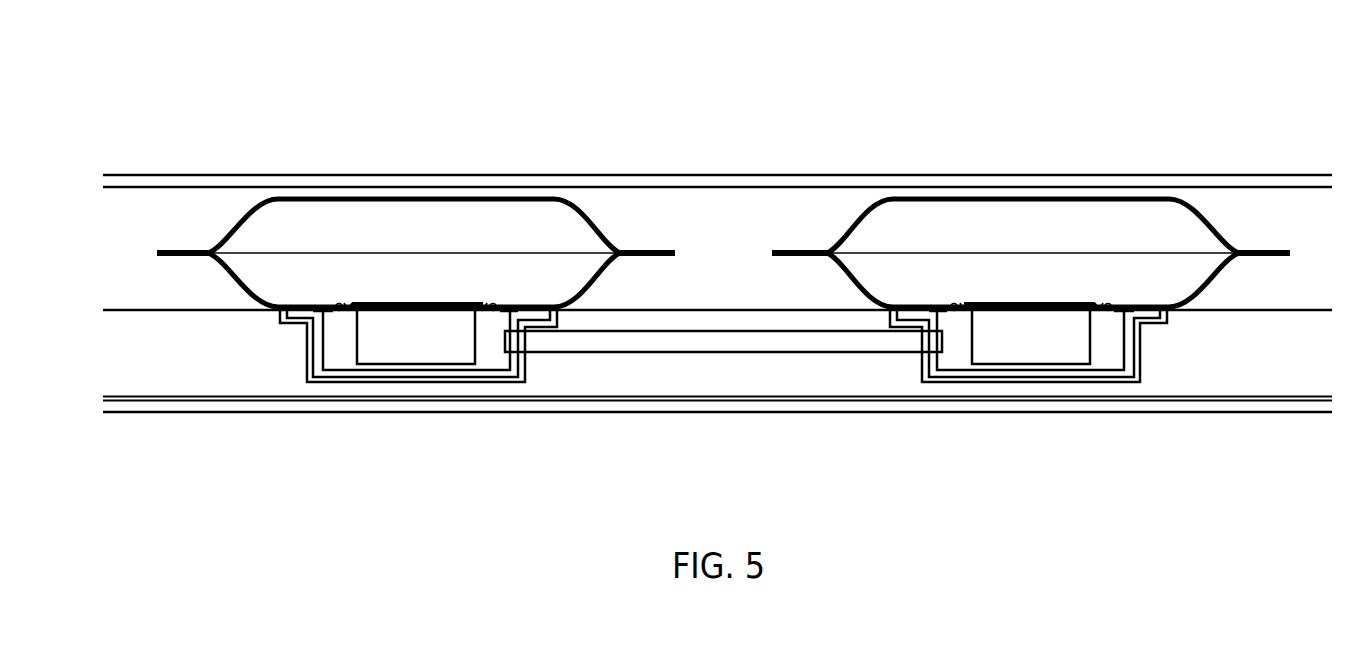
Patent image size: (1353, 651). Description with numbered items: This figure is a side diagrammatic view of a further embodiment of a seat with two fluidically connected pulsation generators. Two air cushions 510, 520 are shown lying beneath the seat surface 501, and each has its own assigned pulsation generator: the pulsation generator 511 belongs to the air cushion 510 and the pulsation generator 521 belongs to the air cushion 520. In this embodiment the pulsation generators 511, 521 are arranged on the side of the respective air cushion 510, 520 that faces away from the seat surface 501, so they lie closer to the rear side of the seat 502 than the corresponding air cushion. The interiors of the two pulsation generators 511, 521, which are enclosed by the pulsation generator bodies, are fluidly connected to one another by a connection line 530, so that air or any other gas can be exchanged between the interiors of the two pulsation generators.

The seat surface 501 is at (923, 107).
The rear side of the seat 502 is at (167, 420).
The air cushion 510 is at (218, 277).
The air cushion 520 is at (833, 222).
The pulsation generator 511 is at (317, 380).
The pulsation generator 521 is at (1137, 382).
The connection line 530 is at (738, 354).